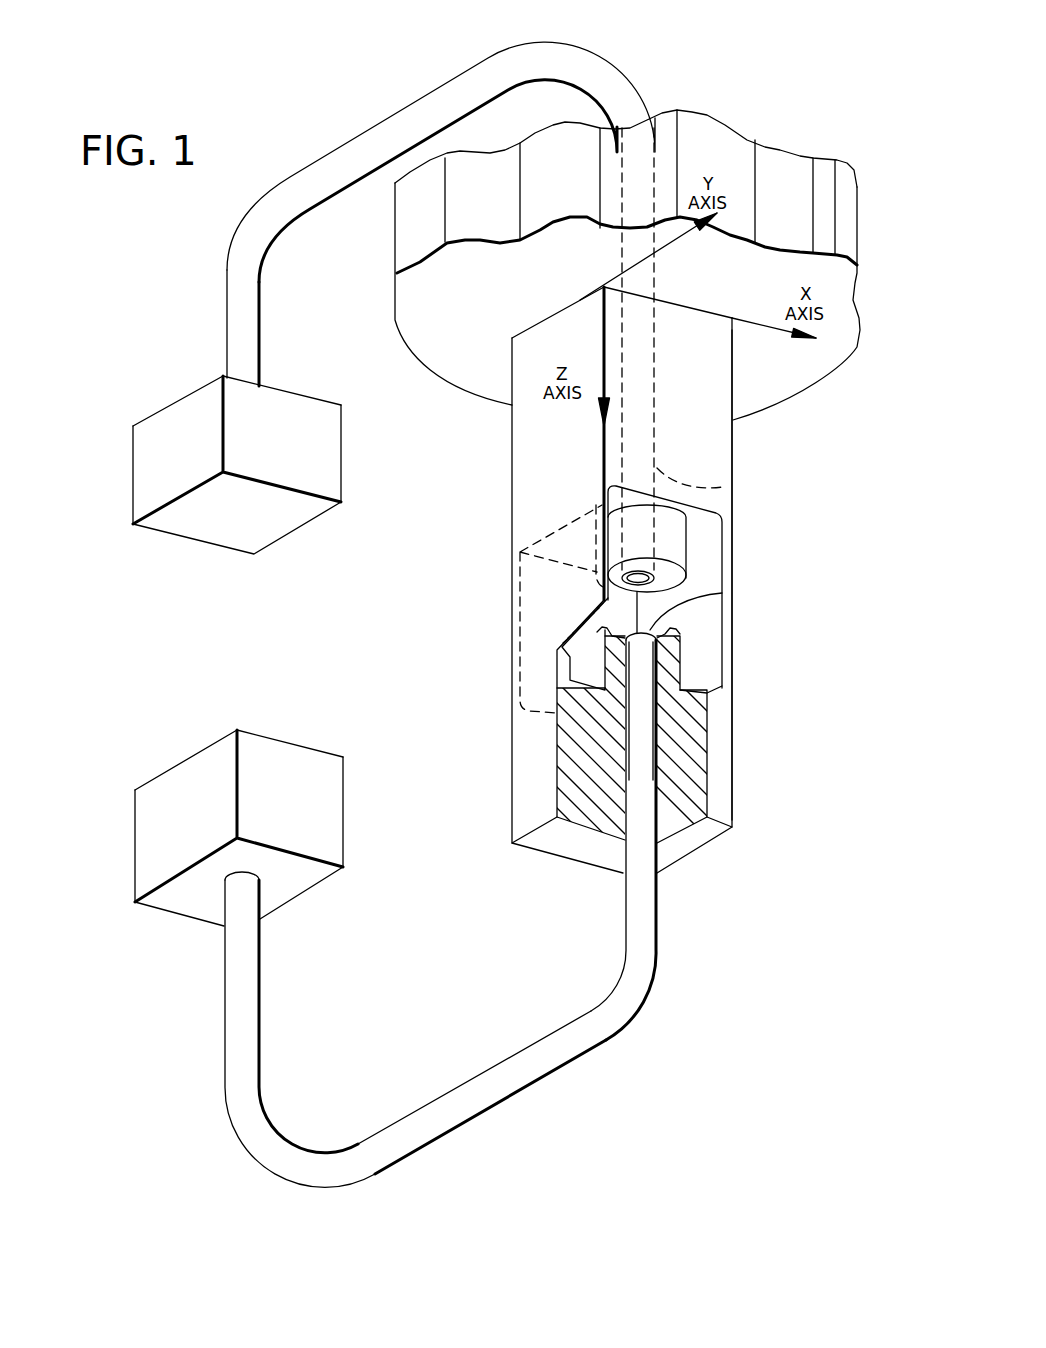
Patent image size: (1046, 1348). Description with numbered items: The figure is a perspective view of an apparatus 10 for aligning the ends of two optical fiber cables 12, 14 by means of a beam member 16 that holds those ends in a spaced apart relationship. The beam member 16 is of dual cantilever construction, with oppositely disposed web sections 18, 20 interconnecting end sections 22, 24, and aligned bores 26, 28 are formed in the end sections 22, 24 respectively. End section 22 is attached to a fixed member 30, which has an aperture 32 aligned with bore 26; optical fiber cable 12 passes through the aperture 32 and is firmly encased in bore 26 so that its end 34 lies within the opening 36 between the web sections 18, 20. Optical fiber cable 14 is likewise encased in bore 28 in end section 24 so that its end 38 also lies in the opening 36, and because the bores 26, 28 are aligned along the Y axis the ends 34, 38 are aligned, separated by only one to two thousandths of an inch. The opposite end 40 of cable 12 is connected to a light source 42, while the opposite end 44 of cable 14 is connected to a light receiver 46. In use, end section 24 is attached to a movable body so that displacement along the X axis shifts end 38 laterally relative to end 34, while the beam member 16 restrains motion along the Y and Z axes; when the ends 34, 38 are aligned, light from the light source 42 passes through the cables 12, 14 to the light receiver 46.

The apparatus 10 is at (763, 506).
The optical fiber cable 12 is at (592, 60).
The optical fiber cable 14 is at (637, 963).
The beam member 16 is at (723, 457).
The web section 18 is at (540, 607).
The web section 20 is at (697, 627).
The end section 22 is at (723, 425).
The end section 24 is at (725, 703).
The bore 26 is at (723, 487).
The bore 28 is at (652, 750).
The fixed member 30 is at (823, 173).
The aperture 32 is at (656, 162).
The end 34 is at (654, 578).
The opening 36 is at (711, 546).
The end 38 is at (700, 594).
The opposite end 40 is at (255, 357).
The light source 42 is at (332, 459).
The opposite end 44 is at (248, 963).
The light receiver 46 is at (320, 810).